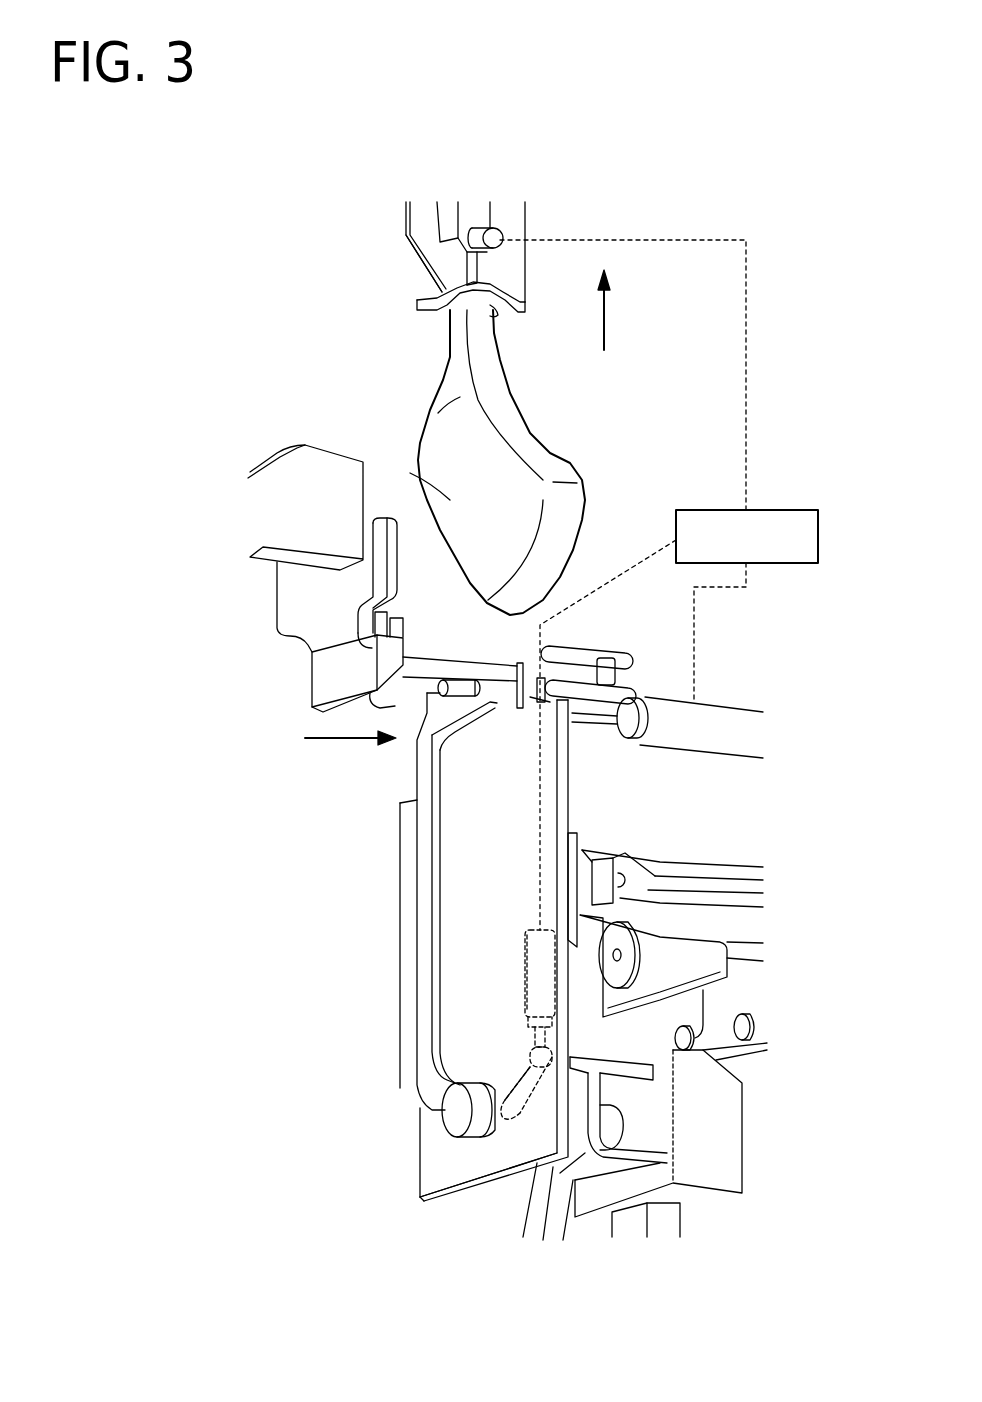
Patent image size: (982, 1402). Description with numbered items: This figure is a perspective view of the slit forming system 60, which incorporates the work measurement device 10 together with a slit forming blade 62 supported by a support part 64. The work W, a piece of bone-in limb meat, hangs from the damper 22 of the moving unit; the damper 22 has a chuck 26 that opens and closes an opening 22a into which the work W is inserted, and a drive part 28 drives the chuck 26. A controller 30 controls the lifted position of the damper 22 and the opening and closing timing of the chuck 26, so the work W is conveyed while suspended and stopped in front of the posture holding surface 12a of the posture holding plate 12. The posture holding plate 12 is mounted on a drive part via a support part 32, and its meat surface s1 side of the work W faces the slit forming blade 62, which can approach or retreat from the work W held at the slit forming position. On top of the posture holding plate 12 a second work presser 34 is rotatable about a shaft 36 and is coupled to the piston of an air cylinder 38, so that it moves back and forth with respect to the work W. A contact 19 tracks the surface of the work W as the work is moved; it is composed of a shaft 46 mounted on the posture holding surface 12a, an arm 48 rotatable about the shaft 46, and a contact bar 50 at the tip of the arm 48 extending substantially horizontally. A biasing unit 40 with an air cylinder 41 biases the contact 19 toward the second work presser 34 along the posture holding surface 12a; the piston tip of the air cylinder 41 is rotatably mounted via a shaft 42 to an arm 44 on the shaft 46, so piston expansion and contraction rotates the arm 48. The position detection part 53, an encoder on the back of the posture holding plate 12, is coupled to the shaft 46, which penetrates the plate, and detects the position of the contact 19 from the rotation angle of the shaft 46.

The work measurement device 10 is at (384, 186).
The drive part 28 is at (498, 232).
The damper 22 is at (519, 228).
The chuck 26 is at (425, 245).
The opening 22a is at (447, 312).
The work W is at (531, 447).
The meat surface s1 is at (450, 500).
The controller 30 is at (762, 511).
The slit forming system 60 is at (310, 578).
The support part 64 is at (287, 597).
The slit forming blade 62 is at (448, 665).
The contact bar 50 is at (472, 678).
The shaft 36 is at (622, 652).
The air cylinder 38 is at (705, 702).
The second work presser 34 is at (578, 697).
The support part 32 is at (743, 875).
The contact 19 is at (427, 966).
The biasing unit 40 is at (527, 923).
The air cylinder 41 is at (530, 965).
The arm 48 is at (405, 945).
The shaft 42 is at (538, 1052).
The arm 44 is at (527, 1087).
The shaft 46 is at (450, 1110).
The posture holding surface 12a is at (420, 1160).
The posture holding plate 12 is at (457, 1198).
The position detection part 53 is at (718, 1158).